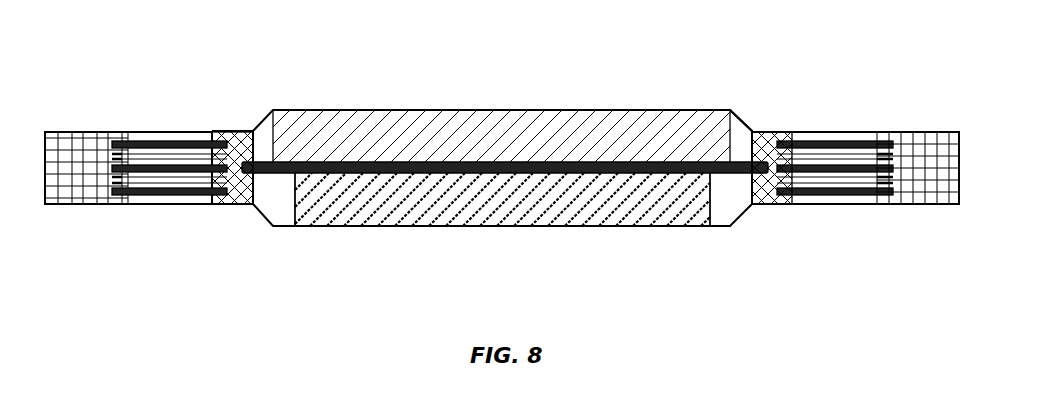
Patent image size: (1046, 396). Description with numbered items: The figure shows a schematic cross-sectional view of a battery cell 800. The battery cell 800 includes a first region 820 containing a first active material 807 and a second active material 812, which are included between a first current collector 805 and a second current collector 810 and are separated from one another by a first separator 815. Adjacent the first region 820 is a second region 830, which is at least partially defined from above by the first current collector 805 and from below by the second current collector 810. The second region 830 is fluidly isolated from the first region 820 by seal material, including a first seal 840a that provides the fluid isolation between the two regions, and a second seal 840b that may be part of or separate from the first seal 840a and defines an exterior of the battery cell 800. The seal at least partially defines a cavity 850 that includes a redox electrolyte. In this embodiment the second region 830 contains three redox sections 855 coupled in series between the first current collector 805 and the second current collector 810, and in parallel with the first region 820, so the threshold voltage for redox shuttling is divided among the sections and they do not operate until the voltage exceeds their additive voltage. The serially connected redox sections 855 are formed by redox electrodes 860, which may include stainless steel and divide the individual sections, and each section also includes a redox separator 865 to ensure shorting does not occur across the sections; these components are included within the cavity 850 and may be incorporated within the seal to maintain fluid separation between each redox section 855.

The battery cell 800 is at (287, 77).
The first current collector 805 is at (734, 113).
The first active material 807 is at (516, 110).
The second current collector 810 is at (578, 226).
The second active material 812 is at (418, 226).
The first separator 815 is at (663, 177).
The first region 820 is at (331, 110).
The second region 830 is at (843, 131).
The first seal 840a is at (227, 205).
The second seal 840b is at (72, 205).
The cavity 850 is at (860, 205).
The redox sections 855 is at (143, 132).
The redox electrodes 860 is at (160, 180).
The redox separator 865 is at (155, 142).